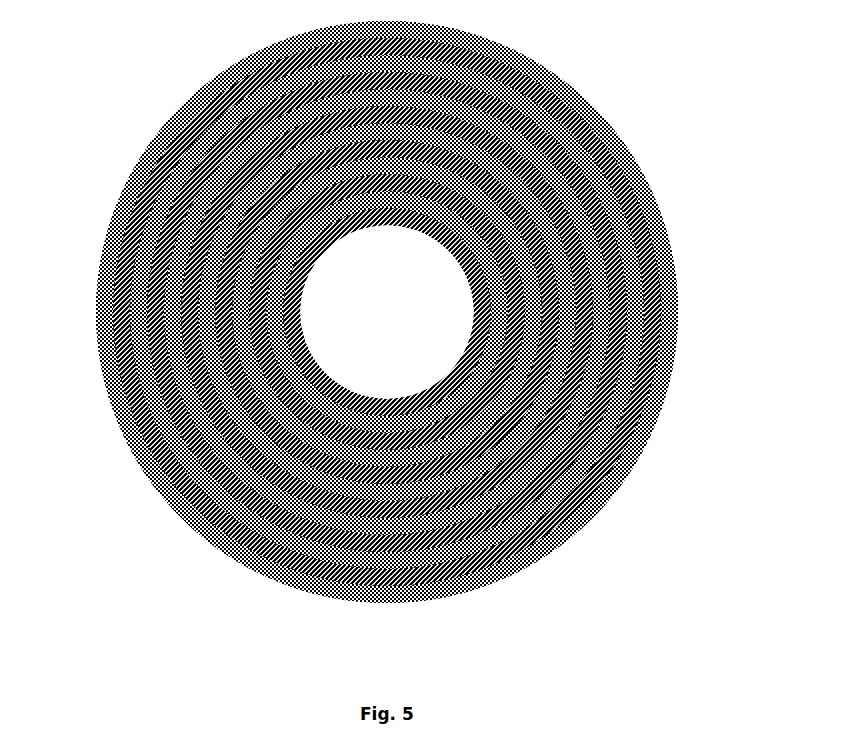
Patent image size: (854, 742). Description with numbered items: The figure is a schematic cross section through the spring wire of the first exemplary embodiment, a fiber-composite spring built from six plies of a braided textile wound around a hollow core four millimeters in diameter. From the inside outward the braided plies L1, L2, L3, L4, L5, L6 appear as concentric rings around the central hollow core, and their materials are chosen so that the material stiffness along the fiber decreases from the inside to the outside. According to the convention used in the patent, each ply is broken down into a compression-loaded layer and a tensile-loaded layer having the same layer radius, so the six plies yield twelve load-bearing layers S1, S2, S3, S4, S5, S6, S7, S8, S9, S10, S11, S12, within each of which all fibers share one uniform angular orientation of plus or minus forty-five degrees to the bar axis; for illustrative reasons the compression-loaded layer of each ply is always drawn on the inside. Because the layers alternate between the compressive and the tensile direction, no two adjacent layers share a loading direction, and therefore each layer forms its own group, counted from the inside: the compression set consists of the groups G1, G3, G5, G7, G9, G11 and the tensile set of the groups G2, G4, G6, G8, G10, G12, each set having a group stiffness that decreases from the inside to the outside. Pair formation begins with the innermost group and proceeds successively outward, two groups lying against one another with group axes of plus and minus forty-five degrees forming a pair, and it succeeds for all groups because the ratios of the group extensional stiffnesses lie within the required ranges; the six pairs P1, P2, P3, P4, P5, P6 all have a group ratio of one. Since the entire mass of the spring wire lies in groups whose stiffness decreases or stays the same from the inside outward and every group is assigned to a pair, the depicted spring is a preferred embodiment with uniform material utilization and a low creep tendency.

The layer S1 is at (423, 218).
The layer S2 is at (472, 222).
The layer S3 is at (510, 230).
The layer S4 is at (543, 247).
The layer S5 is at (570, 260).
The layer S6 is at (590, 277).
The layer S7 is at (605, 298).
The layer S8 is at (620, 317).
The layer S9 is at (632, 338).
The layer S10 is at (647, 367).
The layer S11 is at (658, 382).
The layer S12 is at (670, 403).
The group G1 is at (333, 405).
The group G2 is at (358, 433).
The group G3 is at (377, 458).
The group G4 is at (395, 477).
The group G5 is at (417, 493).
The group G6 is at (437, 512).
The group G7 is at (455, 522).
The group G8 is at (475, 533).
The group G9 is at (498, 540).
The group G10 is at (520, 540).
The group G11 is at (542, 540).
The group G12 is at (560, 540).
The ply L1 is at (363, 192).
The ply L2 is at (370, 210).
The ply L3 is at (223, 240).
The ply L4 is at (182, 273).
The ply L5 is at (137, 287).
The ply L6 is at (112, 313).
The pair P1 is at (297, 280).
The pair P2 is at (223, 378).
The pair P3 is at (222, 410).
The pair P4 is at (217, 460).
The pair P5 is at (227, 503).
The pair P6 is at (233, 562).